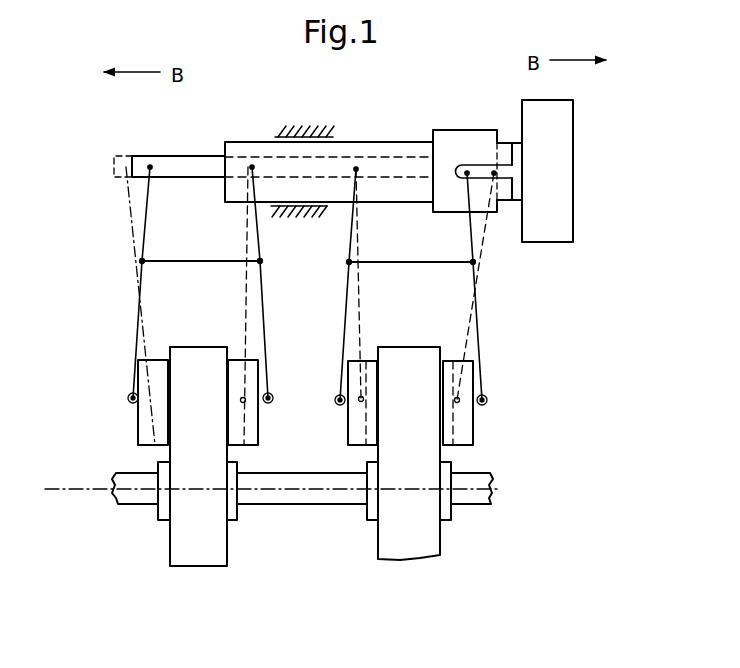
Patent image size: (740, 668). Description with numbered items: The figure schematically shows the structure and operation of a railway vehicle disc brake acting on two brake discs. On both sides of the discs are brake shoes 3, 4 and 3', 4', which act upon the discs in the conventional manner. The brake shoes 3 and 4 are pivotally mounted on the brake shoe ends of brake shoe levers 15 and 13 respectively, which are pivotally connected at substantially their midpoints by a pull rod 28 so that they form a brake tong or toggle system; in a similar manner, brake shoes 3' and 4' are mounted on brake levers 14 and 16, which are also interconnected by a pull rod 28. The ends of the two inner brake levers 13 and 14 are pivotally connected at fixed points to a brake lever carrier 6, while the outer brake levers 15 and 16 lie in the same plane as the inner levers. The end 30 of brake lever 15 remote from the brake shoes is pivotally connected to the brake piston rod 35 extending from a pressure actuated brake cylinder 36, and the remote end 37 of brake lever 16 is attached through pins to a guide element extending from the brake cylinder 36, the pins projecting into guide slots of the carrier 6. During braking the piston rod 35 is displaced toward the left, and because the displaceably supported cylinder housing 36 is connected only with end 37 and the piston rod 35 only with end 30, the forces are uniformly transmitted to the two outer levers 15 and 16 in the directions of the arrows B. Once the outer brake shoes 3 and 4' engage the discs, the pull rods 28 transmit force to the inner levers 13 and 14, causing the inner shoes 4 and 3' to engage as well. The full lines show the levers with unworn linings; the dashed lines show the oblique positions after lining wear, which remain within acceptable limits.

The end of brake lever 30 is at (111, 143).
The brake piston rod 35 is at (210, 155).
The brake lever carrier 6 is at (401, 138).
The brake cylinder 36 is at (568, 127).
The remote end of brake lever 37 is at (487, 208).
The pull rod 28 is at (192, 258).
The brake shoe lever 13 is at (273, 311).
The brake lever 14 is at (342, 330).
The brake shoe lever 15 is at (129, 339).
The brake lever 16 is at (484, 319).
The brake shoe 3 is at (139, 404).
The brake shoe 4 is at (258, 404).
The brake shoe 3' is at (345, 410).
The brake shoe 4' is at (483, 410).